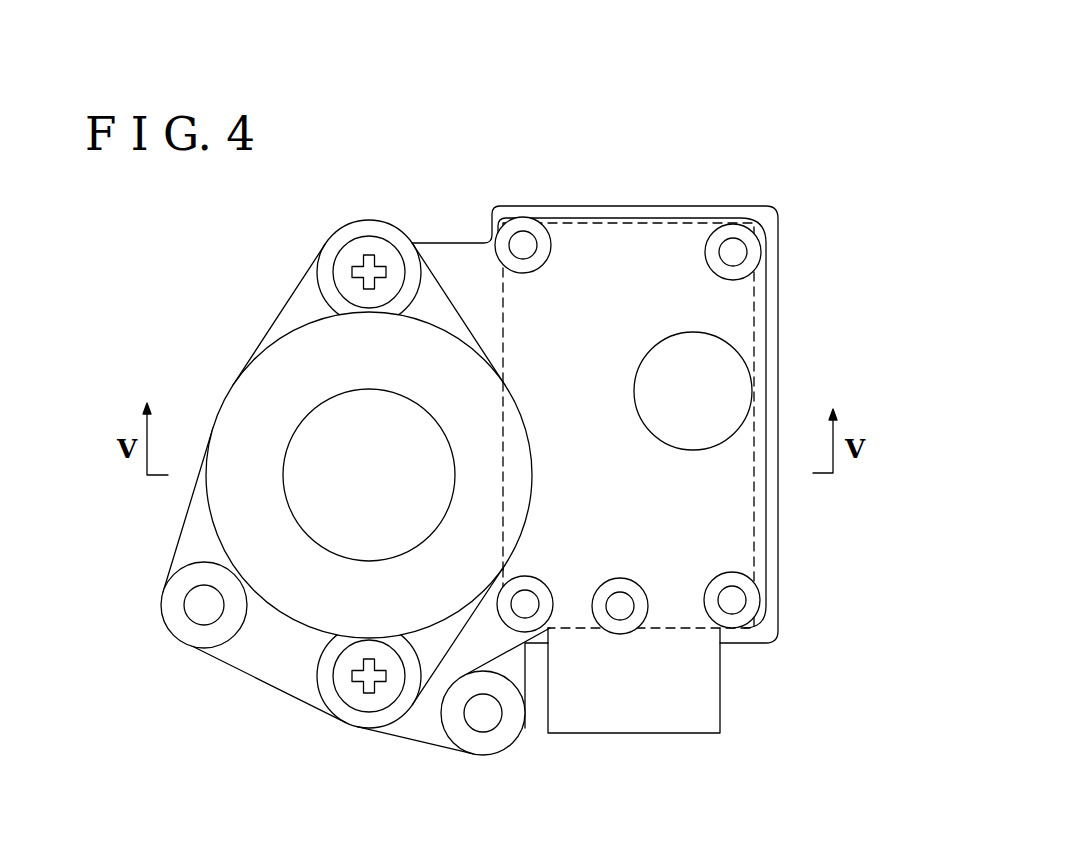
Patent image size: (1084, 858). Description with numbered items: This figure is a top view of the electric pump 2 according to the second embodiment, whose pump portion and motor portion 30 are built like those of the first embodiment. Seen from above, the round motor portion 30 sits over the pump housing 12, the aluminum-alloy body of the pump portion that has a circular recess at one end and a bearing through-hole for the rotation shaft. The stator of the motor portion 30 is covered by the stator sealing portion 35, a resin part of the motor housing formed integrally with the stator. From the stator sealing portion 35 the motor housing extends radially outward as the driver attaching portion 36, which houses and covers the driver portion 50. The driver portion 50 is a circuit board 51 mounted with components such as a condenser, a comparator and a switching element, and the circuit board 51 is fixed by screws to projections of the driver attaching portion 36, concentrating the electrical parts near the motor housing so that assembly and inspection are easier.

The electric pump 2 is at (180, 307).
The pump housing 12 is at (252, 660).
The motor portion 30 is at (205, 385).
The stator sealing portion 35 is at (228, 508).
The driver attaching portion 36 is at (725, 537).
The driver portion 50 is at (753, 288).
The circuit board 51 is at (748, 323).